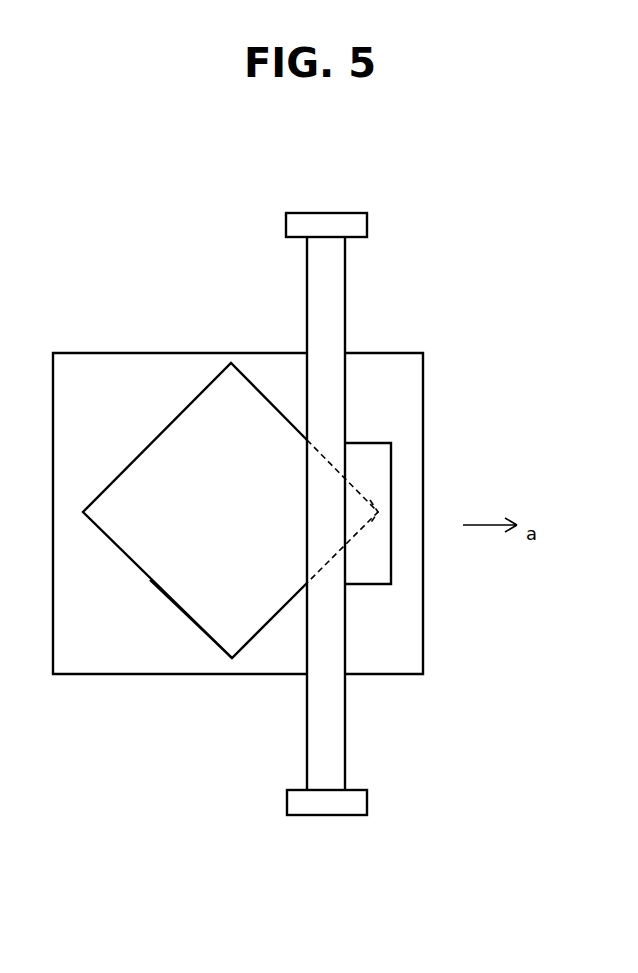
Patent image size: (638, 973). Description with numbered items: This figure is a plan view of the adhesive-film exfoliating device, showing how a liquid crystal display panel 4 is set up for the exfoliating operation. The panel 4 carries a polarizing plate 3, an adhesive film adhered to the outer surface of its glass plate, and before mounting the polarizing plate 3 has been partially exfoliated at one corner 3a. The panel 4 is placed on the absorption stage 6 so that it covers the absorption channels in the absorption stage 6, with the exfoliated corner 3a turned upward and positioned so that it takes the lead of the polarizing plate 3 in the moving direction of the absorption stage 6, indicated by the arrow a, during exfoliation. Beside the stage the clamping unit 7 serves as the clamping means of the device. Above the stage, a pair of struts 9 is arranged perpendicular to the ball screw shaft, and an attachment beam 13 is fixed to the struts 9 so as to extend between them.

The polarizing plate 3 is at (248, 608).
The corner of polarizing plate 3a is at (368, 492).
The liquid crystal display panel 4 is at (183, 617).
The absorption stage 6 is at (407, 650).
The clamping unit 7 is at (380, 469).
The strut 9 is at (355, 224).
The attachment beam 13 is at (331, 387).